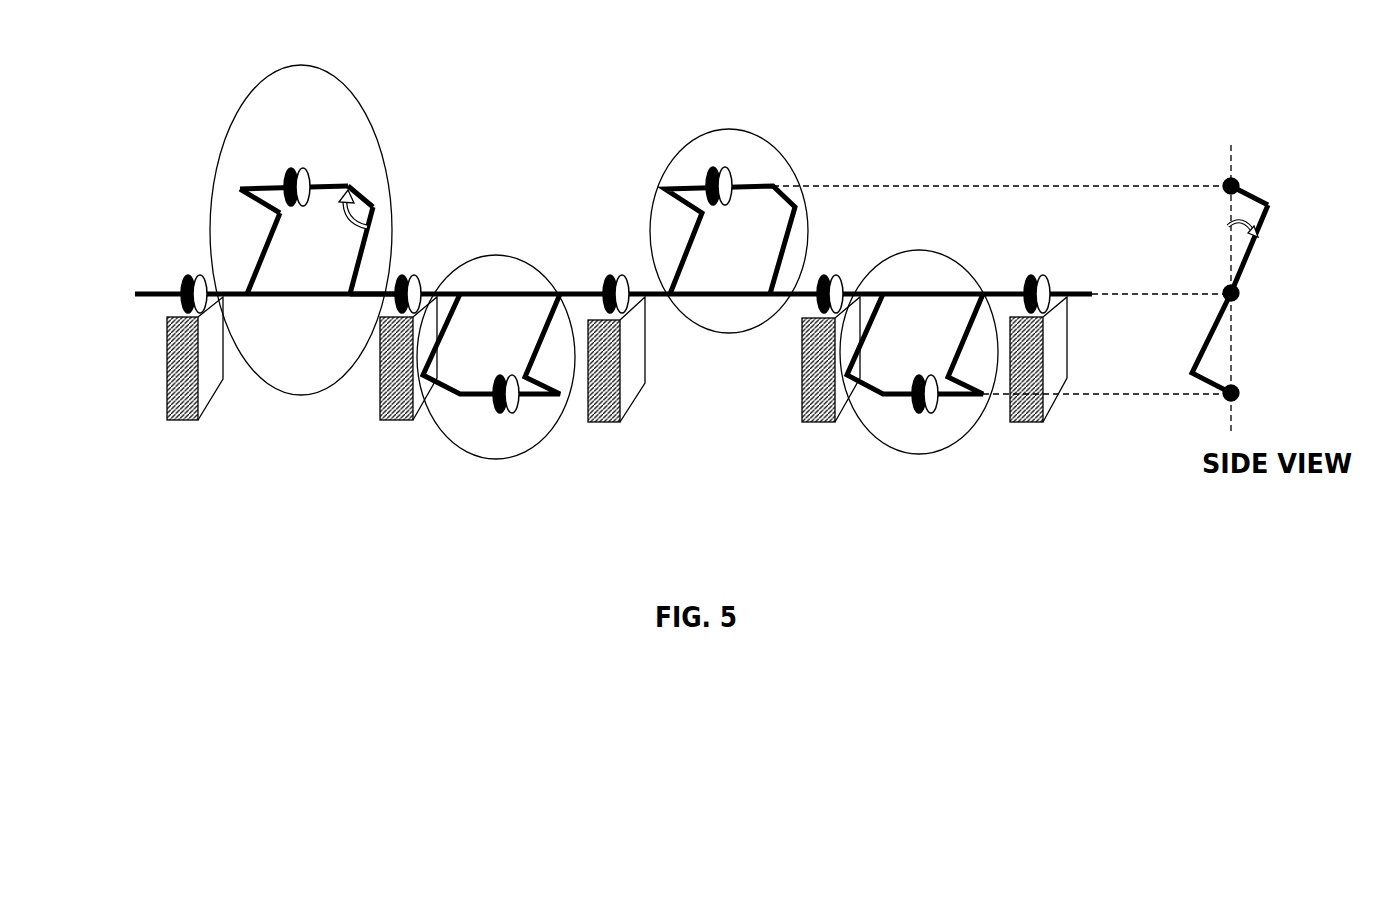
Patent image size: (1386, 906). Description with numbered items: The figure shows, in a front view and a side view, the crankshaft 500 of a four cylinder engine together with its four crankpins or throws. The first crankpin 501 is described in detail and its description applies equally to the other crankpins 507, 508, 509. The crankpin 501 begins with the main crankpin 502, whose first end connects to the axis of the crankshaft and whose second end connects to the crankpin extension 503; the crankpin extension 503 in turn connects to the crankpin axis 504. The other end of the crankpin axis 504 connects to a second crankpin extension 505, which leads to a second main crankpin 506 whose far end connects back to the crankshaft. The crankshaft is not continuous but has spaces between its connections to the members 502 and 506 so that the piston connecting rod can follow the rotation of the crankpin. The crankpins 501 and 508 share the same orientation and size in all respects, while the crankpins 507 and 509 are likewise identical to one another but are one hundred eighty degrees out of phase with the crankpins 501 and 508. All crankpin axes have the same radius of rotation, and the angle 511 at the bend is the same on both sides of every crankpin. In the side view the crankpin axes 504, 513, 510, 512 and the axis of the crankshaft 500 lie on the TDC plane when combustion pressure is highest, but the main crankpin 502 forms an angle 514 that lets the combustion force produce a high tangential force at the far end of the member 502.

The crankshaft 500 is at (147, 303).
The crankpin 501 is at (375, 117).
The main crankpin 502 is at (370, 235).
The crankpin extension 503 is at (370, 188).
The crankpin axis 504 is at (327, 182).
The crankpin extension 505 is at (257, 210).
The main crankpin 506 is at (270, 262).
The crankpin 507 is at (518, 460).
The crankpin 508 is at (688, 138).
The crankpin 509 is at (928, 453).
The crankpin axis 510 is at (472, 398).
The angle 511 is at (347, 228).
The crankpin axis 512 is at (897, 398).
The crankpin axis 513 is at (753, 183).
The angle 514 is at (1233, 238).